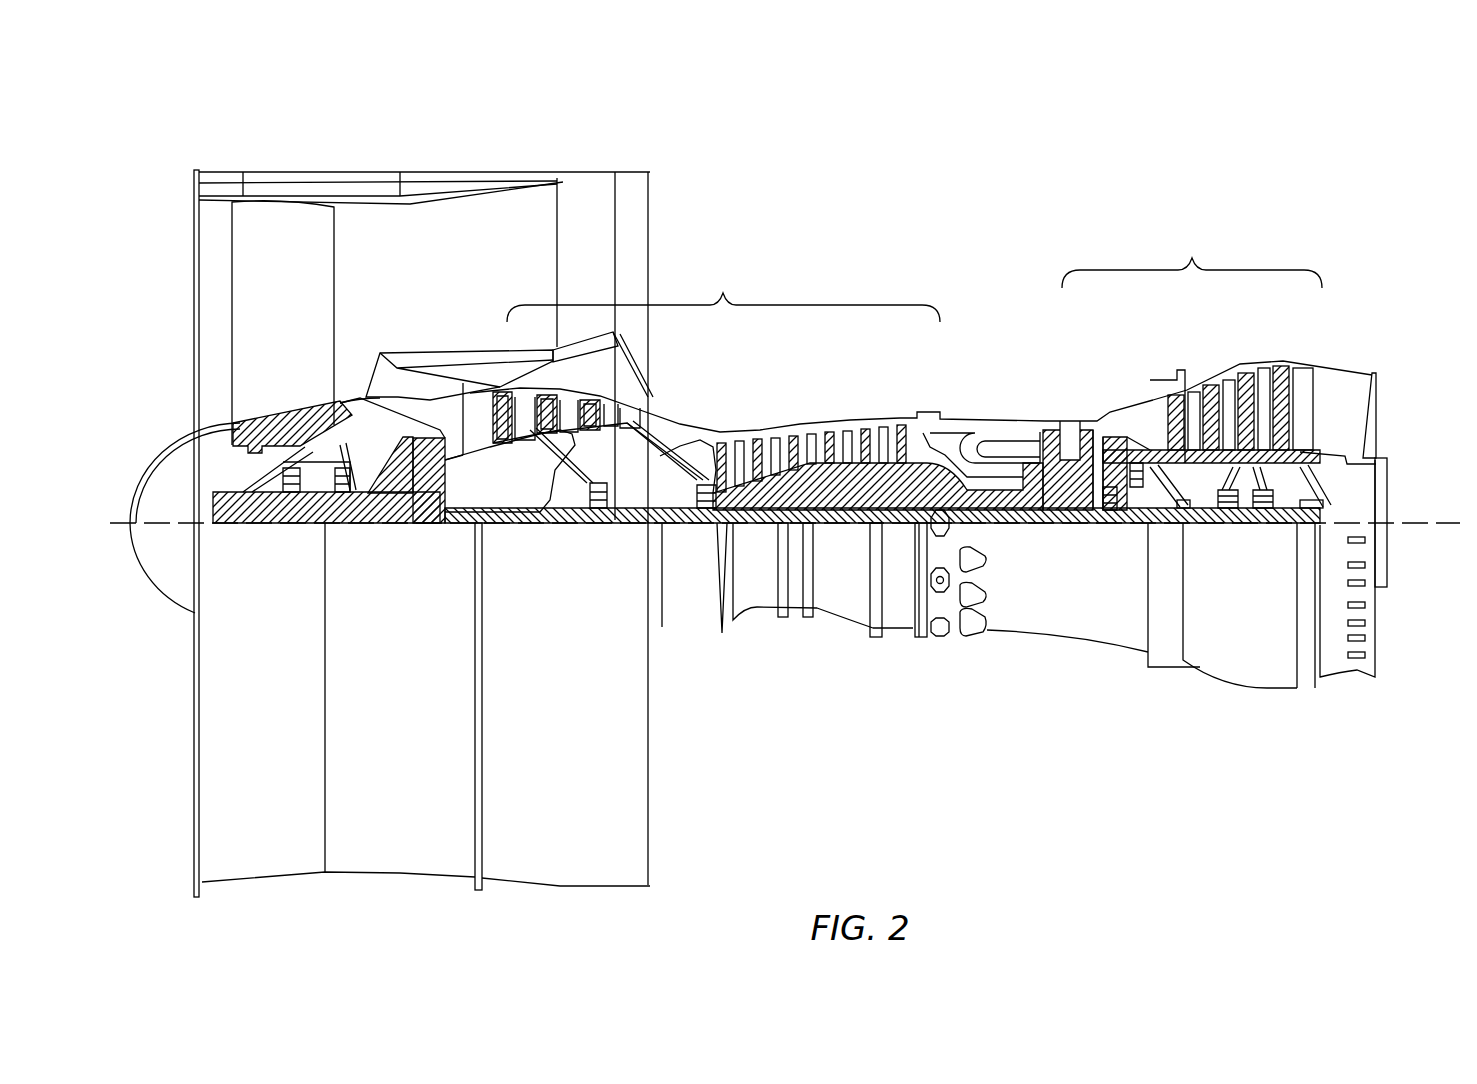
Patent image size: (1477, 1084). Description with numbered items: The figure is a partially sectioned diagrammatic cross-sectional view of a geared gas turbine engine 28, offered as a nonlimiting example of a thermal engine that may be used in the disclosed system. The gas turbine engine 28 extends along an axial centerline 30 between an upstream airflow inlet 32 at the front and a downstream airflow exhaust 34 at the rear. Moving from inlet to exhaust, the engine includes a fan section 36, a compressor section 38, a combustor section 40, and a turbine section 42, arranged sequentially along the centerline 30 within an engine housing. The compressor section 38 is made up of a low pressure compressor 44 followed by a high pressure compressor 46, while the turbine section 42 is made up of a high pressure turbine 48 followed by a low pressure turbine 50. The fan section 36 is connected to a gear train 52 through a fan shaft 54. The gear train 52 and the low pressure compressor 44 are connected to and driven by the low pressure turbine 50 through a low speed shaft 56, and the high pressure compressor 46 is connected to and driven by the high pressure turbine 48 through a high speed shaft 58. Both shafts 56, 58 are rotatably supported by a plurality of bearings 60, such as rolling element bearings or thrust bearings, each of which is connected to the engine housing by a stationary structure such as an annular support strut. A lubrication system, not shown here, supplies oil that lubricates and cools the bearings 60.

The gas turbine engine 28 is at (1345, 131).
The axial centerline 30 is at (1443, 527).
The upstream airflow inlet 32 is at (194, 262).
The downstream airflow exhaust 34 is at (1378, 415).
The fan section 36 is at (293, 166).
The compressor section 38 is at (723, 292).
The combustor section 40 is at (986, 449).
The turbine section 42 is at (1192, 258).
The low pressure compressor 44 is at (606, 389).
The high pressure compressor 46 is at (822, 426).
The high pressure turbine 48 is at (1072, 414).
The low pressure turbine 50 is at (1252, 360).
The gear train 52 is at (425, 517).
The fan shaft 54 is at (272, 520).
The low speed shaft 56 is at (1062, 520).
The high speed shaft 58 is at (1005, 508).
The bearings 60 is at (331, 493).